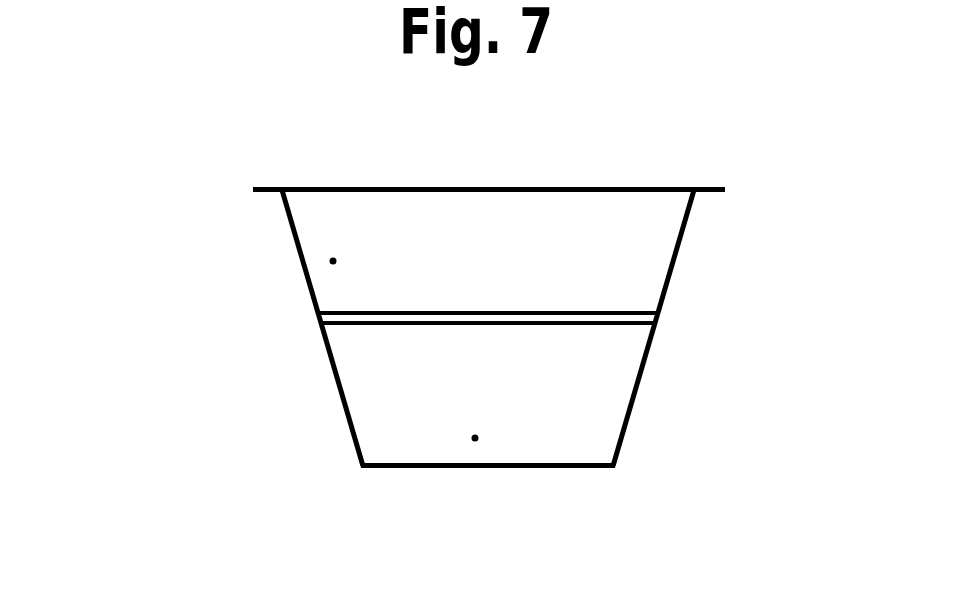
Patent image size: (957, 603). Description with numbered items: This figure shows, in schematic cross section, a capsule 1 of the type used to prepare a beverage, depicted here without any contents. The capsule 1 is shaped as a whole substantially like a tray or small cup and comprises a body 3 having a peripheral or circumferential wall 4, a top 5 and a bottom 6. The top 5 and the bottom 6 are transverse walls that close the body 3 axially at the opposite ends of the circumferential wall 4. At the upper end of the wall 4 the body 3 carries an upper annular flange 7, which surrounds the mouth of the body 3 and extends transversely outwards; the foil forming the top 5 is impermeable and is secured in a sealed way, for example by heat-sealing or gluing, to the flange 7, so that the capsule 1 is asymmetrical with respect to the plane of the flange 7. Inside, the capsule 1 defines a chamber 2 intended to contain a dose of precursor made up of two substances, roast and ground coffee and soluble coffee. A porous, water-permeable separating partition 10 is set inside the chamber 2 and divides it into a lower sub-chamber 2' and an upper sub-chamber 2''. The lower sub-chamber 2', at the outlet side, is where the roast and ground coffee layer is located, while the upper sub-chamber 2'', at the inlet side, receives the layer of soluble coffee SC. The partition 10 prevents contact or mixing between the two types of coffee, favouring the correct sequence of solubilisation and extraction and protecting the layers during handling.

The capsule 1 is at (460, 336).
The chamber 2 is at (468, 224).
The lower sub-chamber 2' is at (456, 501).
The upper sub-chamber 2'' is at (271, 241).
The body 3 is at (658, 362).
The circumferential wall 4 is at (325, 347).
The top 5 is at (572, 187).
The bottom 6 is at (395, 467).
The upper annular flange 7 is at (709, 194).
The porous separating partition 10 is at (540, 330).
The layer of soluble coffee SC is at (764, 301).